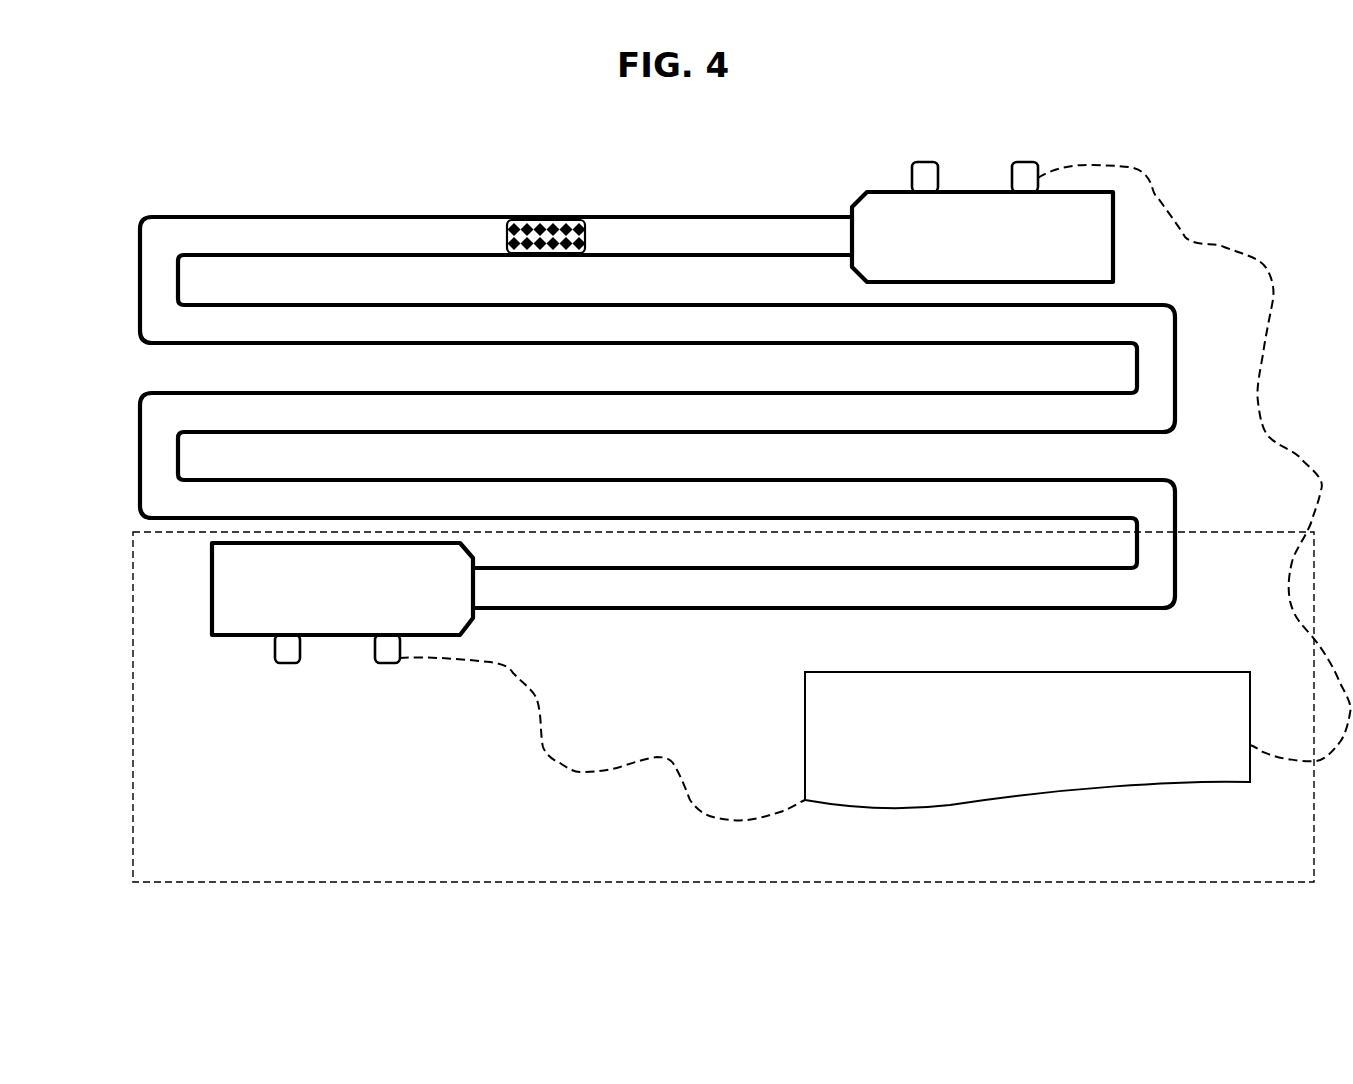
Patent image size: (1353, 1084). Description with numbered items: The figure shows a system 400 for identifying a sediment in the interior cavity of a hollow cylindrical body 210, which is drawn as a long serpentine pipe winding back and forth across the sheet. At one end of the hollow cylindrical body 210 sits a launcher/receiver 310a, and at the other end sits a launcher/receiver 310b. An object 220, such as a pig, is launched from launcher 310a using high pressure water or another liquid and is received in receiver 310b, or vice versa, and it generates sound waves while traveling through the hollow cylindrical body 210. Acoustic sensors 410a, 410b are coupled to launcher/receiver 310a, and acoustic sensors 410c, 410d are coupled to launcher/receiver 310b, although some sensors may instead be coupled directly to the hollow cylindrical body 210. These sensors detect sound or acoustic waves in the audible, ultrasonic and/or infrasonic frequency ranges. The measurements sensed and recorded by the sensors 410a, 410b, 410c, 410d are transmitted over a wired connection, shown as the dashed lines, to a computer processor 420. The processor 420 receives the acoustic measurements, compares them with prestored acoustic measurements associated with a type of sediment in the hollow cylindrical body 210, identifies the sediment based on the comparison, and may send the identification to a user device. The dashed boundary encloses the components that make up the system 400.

The hollow cylindrical body 210 is at (133, 252).
The object 220 is at (521, 254).
The launcher/receiver 310a is at (877, 188).
The launcher/receiver 310b is at (478, 618).
The acoustic sensor 410a is at (925, 158).
The acoustic sensor 410b is at (1032, 158).
The acoustic sensor 410c is at (283, 666).
The acoustic sensor 410d is at (377, 666).
The computer processor 420 is at (857, 807).
The system 400 is at (374, 889).